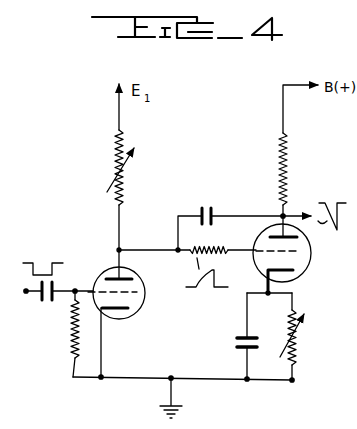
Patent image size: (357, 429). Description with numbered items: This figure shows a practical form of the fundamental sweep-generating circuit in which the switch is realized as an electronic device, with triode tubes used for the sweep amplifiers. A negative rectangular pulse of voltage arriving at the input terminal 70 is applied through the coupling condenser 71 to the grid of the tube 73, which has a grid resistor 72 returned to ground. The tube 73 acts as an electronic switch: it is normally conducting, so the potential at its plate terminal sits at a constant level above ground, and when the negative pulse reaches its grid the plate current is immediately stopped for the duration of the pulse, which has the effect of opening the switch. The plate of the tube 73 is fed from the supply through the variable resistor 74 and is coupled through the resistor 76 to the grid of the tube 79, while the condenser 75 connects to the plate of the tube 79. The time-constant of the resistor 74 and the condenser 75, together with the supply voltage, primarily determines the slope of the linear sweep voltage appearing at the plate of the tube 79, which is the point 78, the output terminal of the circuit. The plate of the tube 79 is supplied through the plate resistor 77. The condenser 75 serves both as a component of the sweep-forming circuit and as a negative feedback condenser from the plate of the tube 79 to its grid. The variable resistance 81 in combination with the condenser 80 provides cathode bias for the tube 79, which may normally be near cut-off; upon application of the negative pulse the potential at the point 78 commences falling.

The input terminal 70 is at (24, 296).
The condenser 71 is at (49, 303).
The grid resistor 72 is at (65, 329).
The tube 73 is at (147, 294).
The resistor 74 is at (113, 178).
The condenser 75 is at (217, 203).
The resistor 76 is at (206, 242).
The plate resistor 77 is at (289, 181).
The point 78 is at (288, 214).
The tube 79 is at (312, 268).
The condenser 80 is at (243, 336).
The variable resistance 81 is at (297, 346).